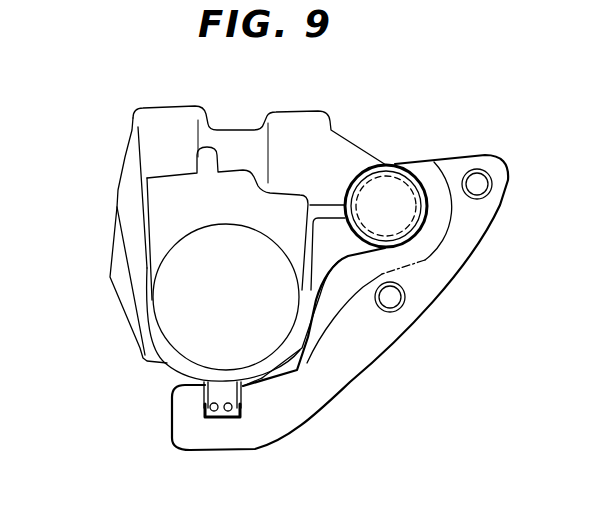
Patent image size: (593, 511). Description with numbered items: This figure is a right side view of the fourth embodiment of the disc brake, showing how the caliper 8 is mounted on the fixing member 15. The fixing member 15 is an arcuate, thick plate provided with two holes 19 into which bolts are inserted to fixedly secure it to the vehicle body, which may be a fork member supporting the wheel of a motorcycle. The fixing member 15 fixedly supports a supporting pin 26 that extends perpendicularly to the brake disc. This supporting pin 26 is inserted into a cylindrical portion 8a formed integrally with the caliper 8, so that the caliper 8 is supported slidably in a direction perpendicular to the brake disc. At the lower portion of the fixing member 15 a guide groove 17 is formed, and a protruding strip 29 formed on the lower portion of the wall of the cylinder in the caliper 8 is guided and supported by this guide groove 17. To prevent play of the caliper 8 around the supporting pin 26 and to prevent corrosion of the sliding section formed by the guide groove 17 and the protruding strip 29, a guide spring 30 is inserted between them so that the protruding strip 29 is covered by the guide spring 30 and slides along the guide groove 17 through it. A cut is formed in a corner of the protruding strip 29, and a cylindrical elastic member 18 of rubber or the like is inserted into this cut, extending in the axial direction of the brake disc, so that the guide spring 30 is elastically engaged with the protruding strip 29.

The caliper 8 is at (284, 108).
The cylindrical portion 8a is at (370, 164).
The supporting pin 26 is at (381, 172).
The fixing member 15 is at (367, 360).
The holes 19 is at (478, 170).
The guide spring 30 is at (203, 393).
The guide groove 17 is at (232, 398).
The elastic member 18 is at (213, 413).
The protruding strip 29 is at (250, 388).